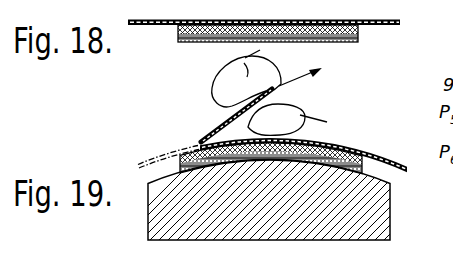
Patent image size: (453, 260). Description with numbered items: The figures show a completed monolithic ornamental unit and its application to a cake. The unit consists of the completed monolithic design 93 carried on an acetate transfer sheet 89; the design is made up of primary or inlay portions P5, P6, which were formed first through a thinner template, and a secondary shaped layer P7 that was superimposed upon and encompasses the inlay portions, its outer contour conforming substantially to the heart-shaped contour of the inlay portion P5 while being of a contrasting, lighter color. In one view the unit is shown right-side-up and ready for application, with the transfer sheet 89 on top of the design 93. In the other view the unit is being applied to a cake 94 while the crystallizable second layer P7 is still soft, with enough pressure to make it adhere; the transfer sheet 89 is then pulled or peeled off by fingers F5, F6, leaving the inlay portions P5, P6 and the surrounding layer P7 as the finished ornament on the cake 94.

In FIG. 18, the transfer sheet 89 is at (373, 20).
In FIG. 19, the transfer sheet 89 is at (276, 120).
In FIG. 18, the monolithic design 93 is at (358, 31).
In FIG. 19, the monolithic design 93 is at (364, 163).
In FIG. 19, the cake 94 is at (390, 225).
In FIG. 19, the finger F5 is at (213, 105).
In FIG. 19, the finger F6 is at (313, 118).
In FIG. 19, the primary or inlay portion P5 is at (258, 162).
In FIG. 19, the primary or inlay portion P6 is at (196, 168).
In FIG. 19, the secondary shaped layer P7 is at (213, 162).